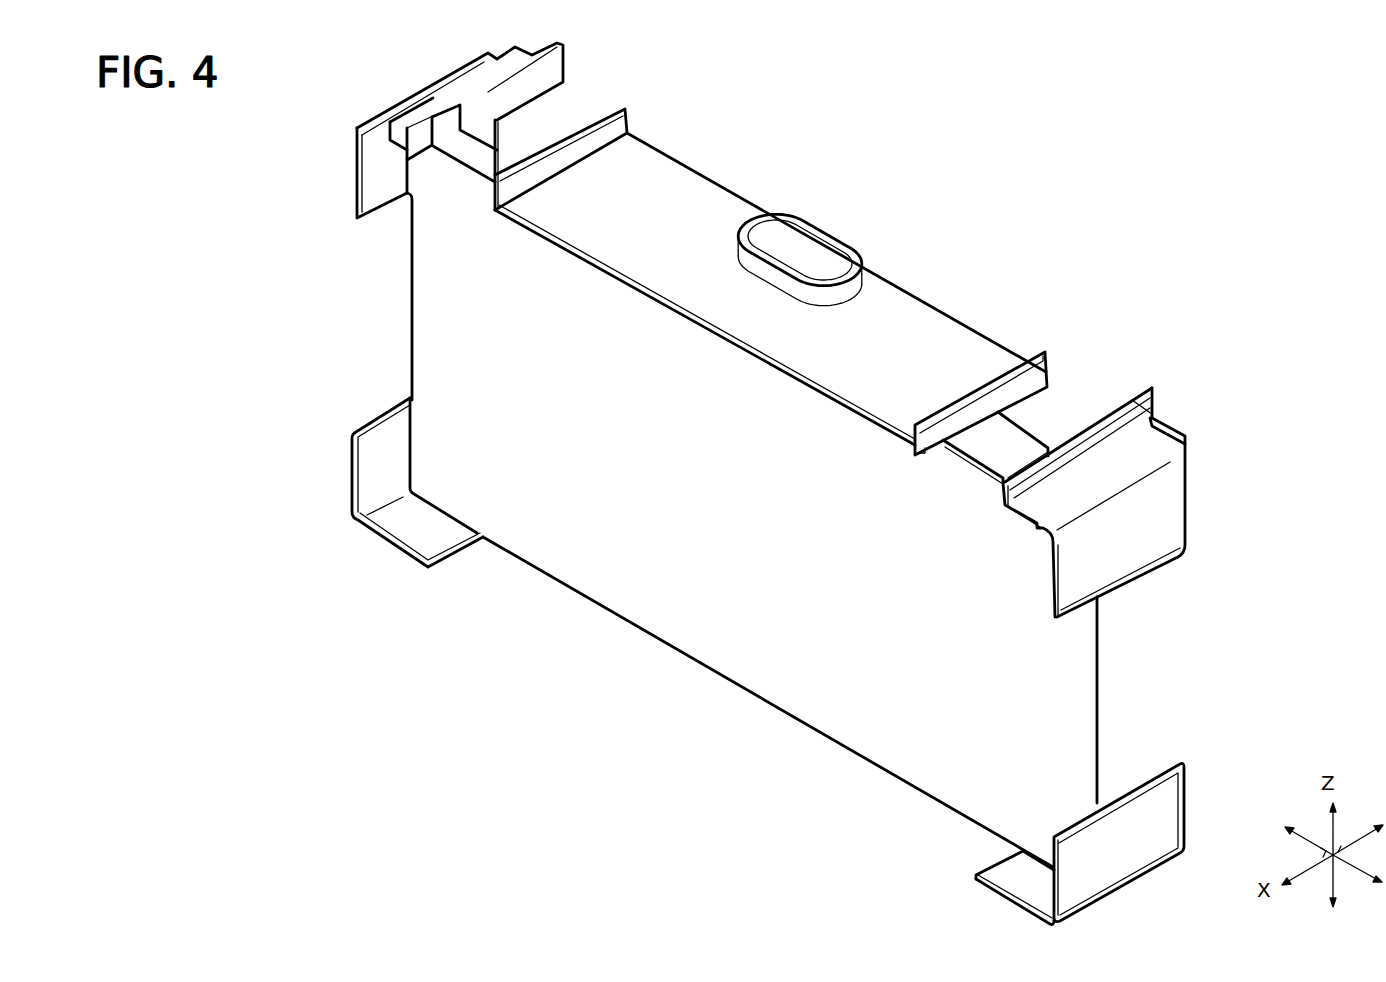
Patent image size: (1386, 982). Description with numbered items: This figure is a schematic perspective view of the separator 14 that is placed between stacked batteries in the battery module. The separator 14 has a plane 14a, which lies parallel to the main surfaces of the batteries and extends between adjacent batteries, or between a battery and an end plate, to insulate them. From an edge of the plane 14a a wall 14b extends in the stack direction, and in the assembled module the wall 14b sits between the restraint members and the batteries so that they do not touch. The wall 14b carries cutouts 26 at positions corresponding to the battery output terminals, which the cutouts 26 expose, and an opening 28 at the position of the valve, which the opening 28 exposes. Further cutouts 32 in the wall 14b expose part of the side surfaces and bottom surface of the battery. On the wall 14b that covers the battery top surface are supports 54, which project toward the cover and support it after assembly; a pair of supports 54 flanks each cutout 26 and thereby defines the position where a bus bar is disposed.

The separator 14 is at (812, 475).
The plane 14a is at (1070, 690).
The wall 14b is at (672, 178).
The opening 28 is at (797, 248).
The support 54 is at (990, 350).
The cutout 26 is at (1040, 403).
The cutout 32 is at (385, 215).